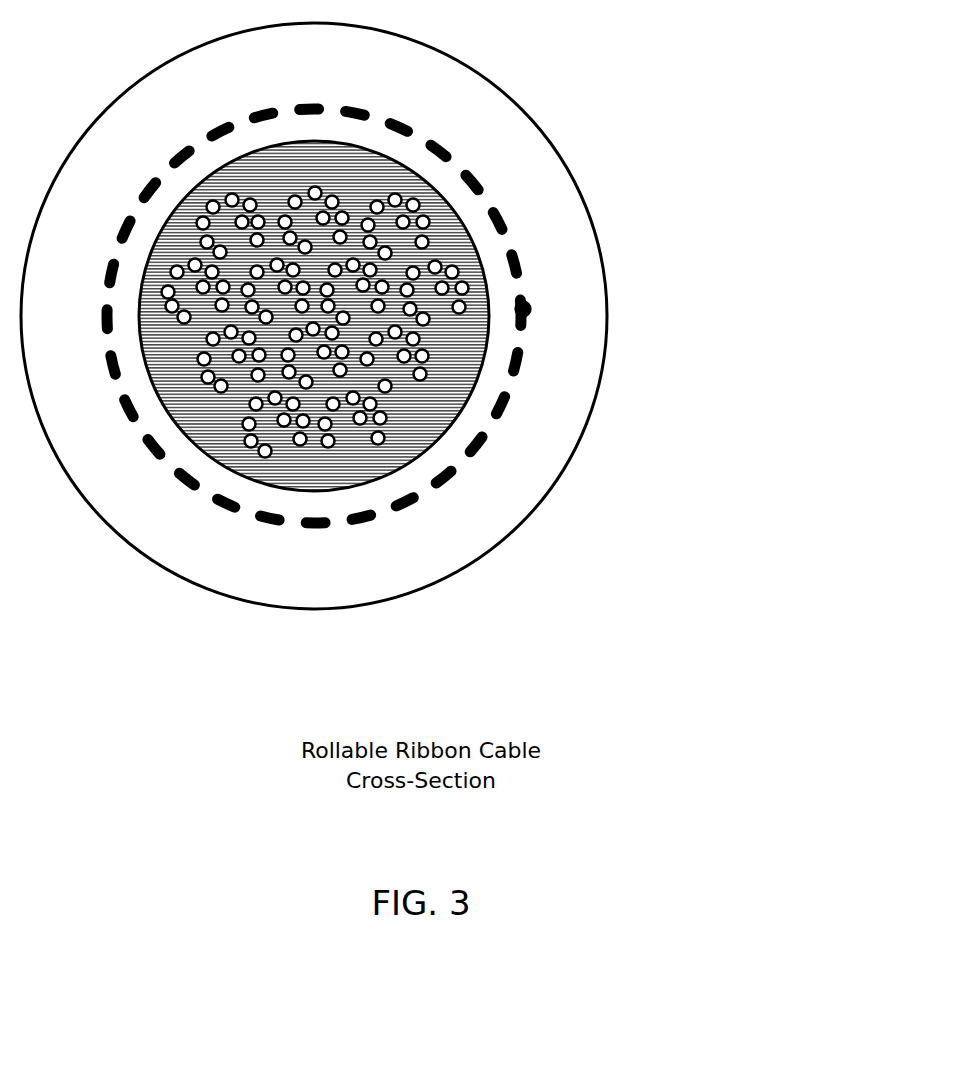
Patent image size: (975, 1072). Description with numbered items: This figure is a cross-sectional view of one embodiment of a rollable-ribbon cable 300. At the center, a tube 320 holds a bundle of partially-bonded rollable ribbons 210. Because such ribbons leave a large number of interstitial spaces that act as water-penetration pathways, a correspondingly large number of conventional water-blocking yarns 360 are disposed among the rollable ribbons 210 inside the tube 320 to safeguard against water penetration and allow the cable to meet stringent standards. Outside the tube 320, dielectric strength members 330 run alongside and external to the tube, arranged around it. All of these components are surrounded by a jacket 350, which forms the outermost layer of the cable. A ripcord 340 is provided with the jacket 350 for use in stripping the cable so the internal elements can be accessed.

The rollable-ribbon cable 300 is at (134, 618).
The jacket 350 is at (366, 63).
The tube 320 is at (422, 167).
The ripcord 340 is at (523, 309).
The rollable ribbons 210 is at (370, 376).
The dielectric strength members 330 is at (449, 469).
The water-blocking yarns 360 is at (345, 450).